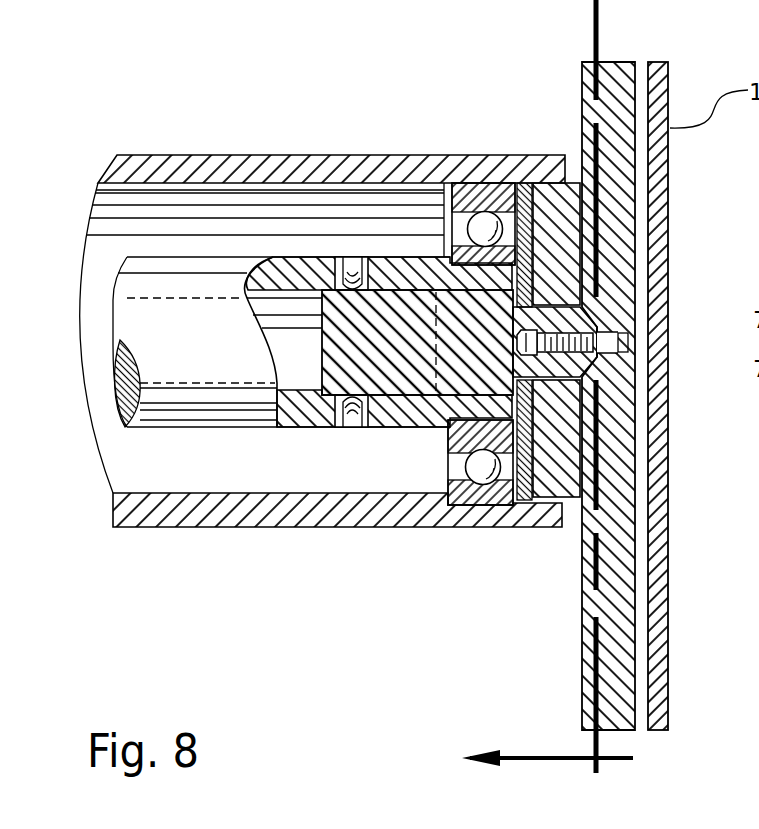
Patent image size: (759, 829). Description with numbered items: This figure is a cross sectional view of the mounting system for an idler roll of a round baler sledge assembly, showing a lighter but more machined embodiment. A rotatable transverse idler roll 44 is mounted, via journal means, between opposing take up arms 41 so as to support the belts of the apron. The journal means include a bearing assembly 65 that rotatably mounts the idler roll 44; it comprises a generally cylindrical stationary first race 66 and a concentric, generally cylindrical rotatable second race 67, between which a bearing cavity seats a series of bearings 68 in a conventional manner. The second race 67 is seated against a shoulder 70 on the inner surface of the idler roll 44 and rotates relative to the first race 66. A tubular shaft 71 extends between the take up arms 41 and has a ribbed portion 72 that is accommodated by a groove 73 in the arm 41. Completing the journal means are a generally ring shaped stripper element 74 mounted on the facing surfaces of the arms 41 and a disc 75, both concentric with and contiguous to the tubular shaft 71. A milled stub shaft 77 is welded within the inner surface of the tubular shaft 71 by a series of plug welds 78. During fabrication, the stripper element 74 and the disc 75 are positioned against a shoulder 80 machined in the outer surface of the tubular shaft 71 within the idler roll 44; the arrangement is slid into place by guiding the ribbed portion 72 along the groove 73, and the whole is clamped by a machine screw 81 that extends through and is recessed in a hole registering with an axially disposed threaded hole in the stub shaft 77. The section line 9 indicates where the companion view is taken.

The section line 9- 9 is at (556, 390).
The take up arm 41 is at (623, 73).
The idler roll 44 is at (231, 156).
The bearing assembly 65 is at (391, 521).
The first race 66 is at (452, 447).
The second race 67 is at (450, 484).
The bearings 68 is at (483, 480).
The shoulder 70 is at (421, 507).
The tubular shaft 71 is at (190, 257).
The ribbed portion 72 is at (580, 313).
The groove 73 is at (578, 400).
The stripper element 74 is at (572, 195).
The disc 75 is at (526, 180).
The stub shaft 77 is at (305, 340).
The plug welds 78 is at (352, 280).
The shoulder 80 is at (448, 258).
The machine screw 81 is at (613, 327).